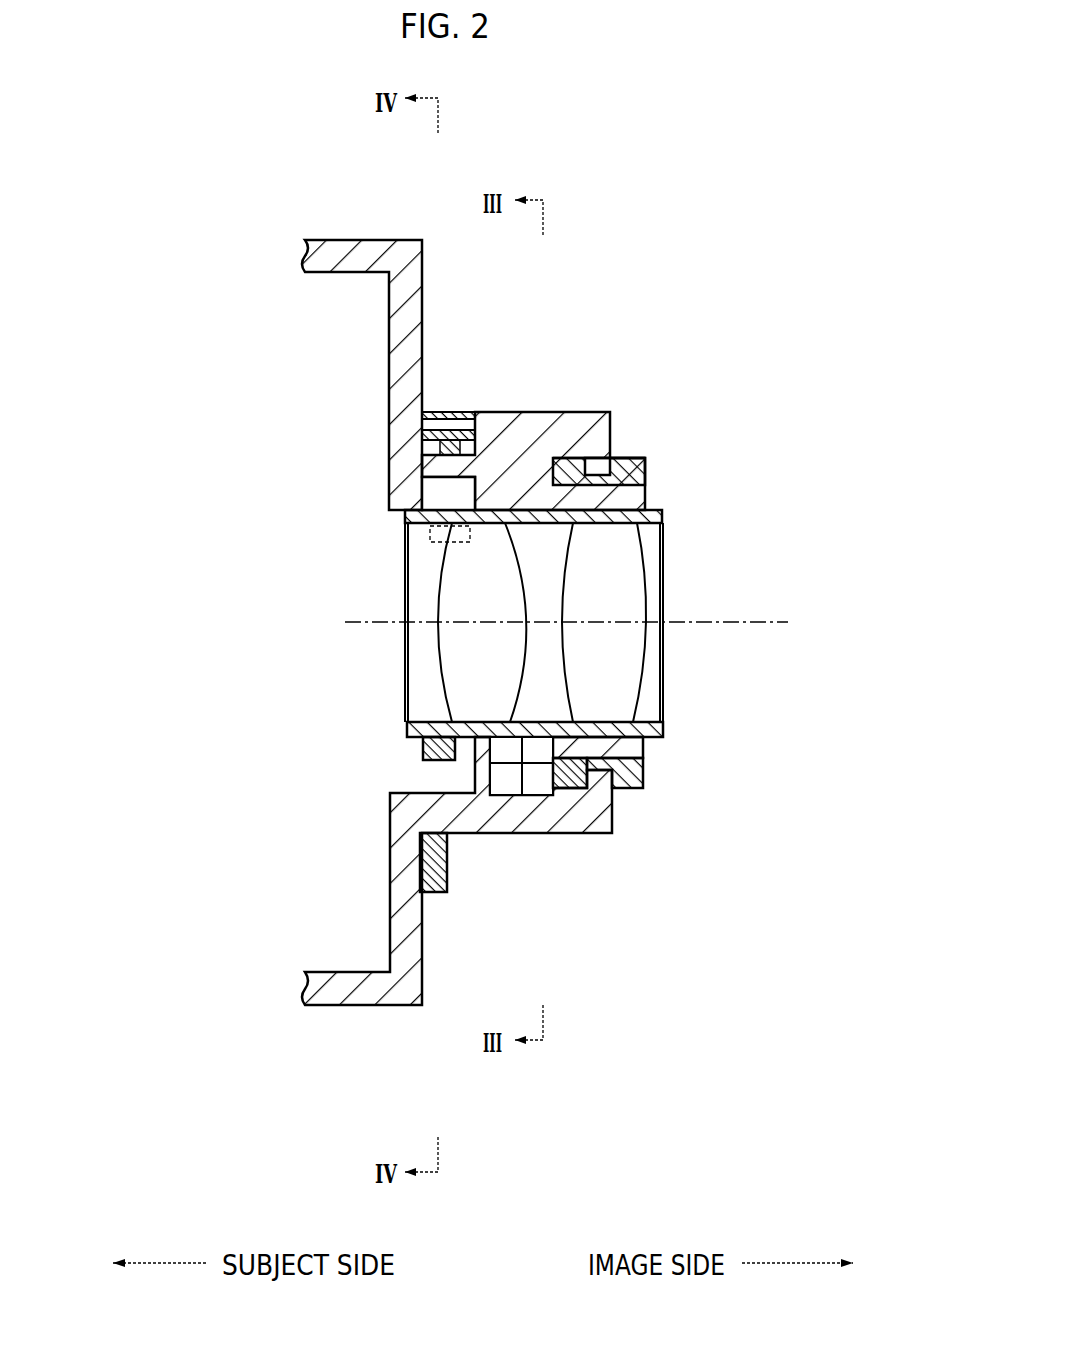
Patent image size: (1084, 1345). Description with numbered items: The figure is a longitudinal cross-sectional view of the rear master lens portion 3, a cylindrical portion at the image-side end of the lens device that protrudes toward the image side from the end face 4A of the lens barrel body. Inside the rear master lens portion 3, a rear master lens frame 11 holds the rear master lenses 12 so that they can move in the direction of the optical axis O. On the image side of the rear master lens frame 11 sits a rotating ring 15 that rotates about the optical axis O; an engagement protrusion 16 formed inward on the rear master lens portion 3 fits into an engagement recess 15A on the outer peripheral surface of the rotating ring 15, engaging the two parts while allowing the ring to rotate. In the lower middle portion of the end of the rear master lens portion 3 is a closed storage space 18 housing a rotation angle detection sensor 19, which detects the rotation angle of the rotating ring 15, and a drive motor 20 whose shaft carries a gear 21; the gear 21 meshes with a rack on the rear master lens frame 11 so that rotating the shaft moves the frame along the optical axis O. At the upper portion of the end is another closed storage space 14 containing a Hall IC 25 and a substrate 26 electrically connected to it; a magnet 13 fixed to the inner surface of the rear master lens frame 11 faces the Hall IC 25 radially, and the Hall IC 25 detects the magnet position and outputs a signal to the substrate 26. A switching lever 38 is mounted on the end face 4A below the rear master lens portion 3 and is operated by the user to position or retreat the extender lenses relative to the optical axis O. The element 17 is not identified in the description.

The rear master lens portion 3 is at (510, 541).
The end face 4A is at (418, 308).
The rear master lens frame 11 is at (662, 508).
The rear master lenses 12 is at (465, 597).
The magnet 13 is at (430, 528).
The storage space 14 is at (452, 412).
The rotating ring 15 is at (629, 406).
The engagement recess 15A is at (603, 458).
The engagement protrusion 16 is at (590, 468).
The recess 17 is at (432, 492).
The storage space 18 is at (508, 782).
The rotation angle detection sensor 19 is at (542, 787).
The drive motor 20 is at (500, 750).
The gear 21 is at (427, 740).
The Hall IC 25 is at (423, 445).
The substrate 26 is at (422, 418).
The switching lever 38 is at (433, 892).
The optical axis O is at (581, 619).